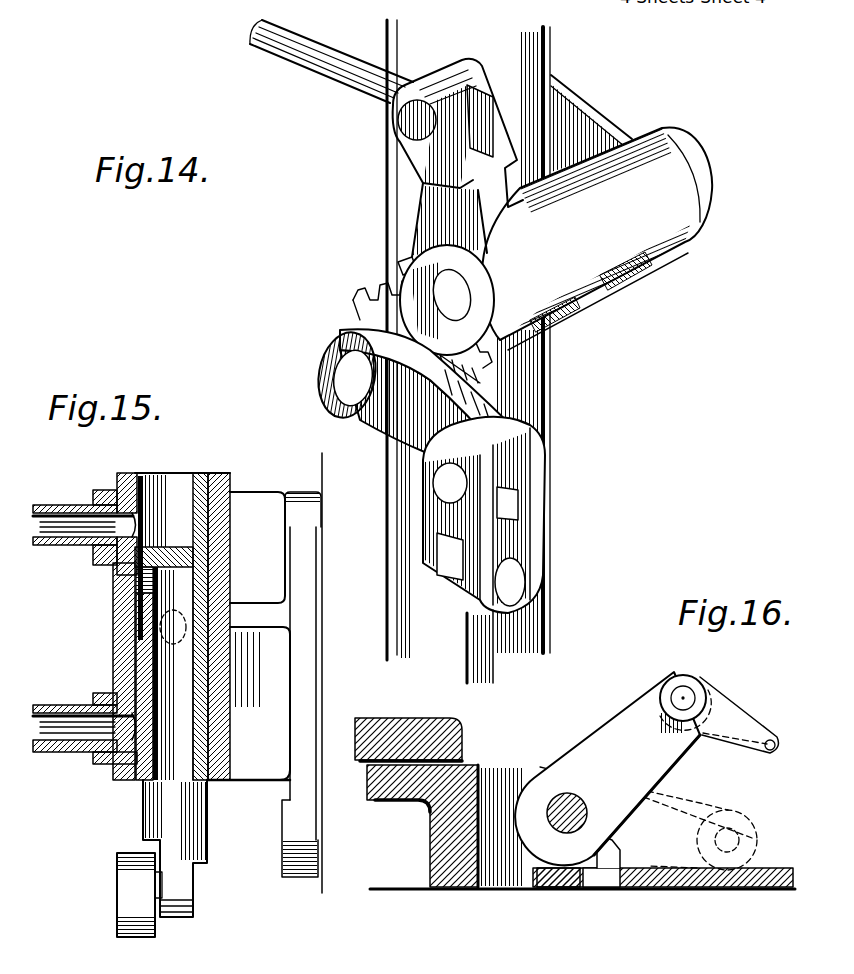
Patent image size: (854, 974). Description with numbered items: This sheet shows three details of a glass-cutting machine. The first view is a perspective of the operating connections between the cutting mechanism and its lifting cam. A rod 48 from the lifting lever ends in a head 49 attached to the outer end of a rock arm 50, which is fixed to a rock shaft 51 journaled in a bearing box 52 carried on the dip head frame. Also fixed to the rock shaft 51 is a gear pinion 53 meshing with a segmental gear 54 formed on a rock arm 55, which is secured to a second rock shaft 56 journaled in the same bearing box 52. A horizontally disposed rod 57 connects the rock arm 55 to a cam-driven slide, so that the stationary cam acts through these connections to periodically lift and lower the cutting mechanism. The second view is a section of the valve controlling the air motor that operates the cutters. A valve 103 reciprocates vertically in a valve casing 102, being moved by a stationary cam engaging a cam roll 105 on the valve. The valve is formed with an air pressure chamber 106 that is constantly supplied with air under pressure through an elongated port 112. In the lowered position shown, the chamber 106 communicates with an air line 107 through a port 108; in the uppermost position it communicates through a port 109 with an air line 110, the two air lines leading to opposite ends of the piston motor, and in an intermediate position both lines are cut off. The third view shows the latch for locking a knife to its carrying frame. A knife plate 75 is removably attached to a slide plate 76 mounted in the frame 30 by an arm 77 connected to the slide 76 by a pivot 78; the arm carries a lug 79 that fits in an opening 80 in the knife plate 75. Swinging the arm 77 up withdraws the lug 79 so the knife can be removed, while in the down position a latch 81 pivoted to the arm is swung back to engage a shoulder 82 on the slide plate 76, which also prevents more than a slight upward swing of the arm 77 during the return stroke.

In FIG. 14, the horizontally disposed rod 57 is at (317, 73).
In FIG. 14, the rock arm 55 is at (450, 210).
In FIG. 14, the segmental gear 54 is at (405, 266).
In FIG. 14, the gear pinion 53 is at (368, 292).
In FIG. 14, the rock shaft 56 is at (461, 280).
In FIG. 14, the bearing box 52 is at (655, 232).
In FIG. 14, the rock shaft 51 is at (343, 374).
In FIG. 14, the rock arm 50 is at (393, 418).
In FIG. 14, the head 49 is at (513, 534).
In FIG. 14, the rod 48 is at (481, 668).
In FIG. 15, the air line 110 is at (60, 503).
In FIG. 15, the port 109 is at (137, 588).
In FIG. 15, the valve casing 102 is at (126, 615).
In FIG. 15, the valve 103 is at (147, 650).
In FIG. 15, the air pressure chamber 106 is at (220, 563).
In FIG. 15, the elongated port 112 is at (207, 681).
In FIG. 15, the air line 107 is at (60, 748).
In FIG. 15, the port 108 is at (100, 767).
In FIG. 15, the cam roll 105 is at (130, 900).
In FIG. 16, the frame 30 is at (385, 728).
In FIG. 16, the slide plate 76 is at (462, 767).
In FIG. 16, the pivot 78 is at (558, 805).
In FIG. 16, the arm 77 is at (590, 752).
In FIG. 16, the shoulder 82 is at (642, 768).
In FIG. 16, the latch 81 is at (732, 723).
In FIG. 16, the opening 80 is at (590, 886).
In FIG. 16, the lug 79 is at (604, 889).
In FIG. 16, the knife plate 75 is at (700, 887).